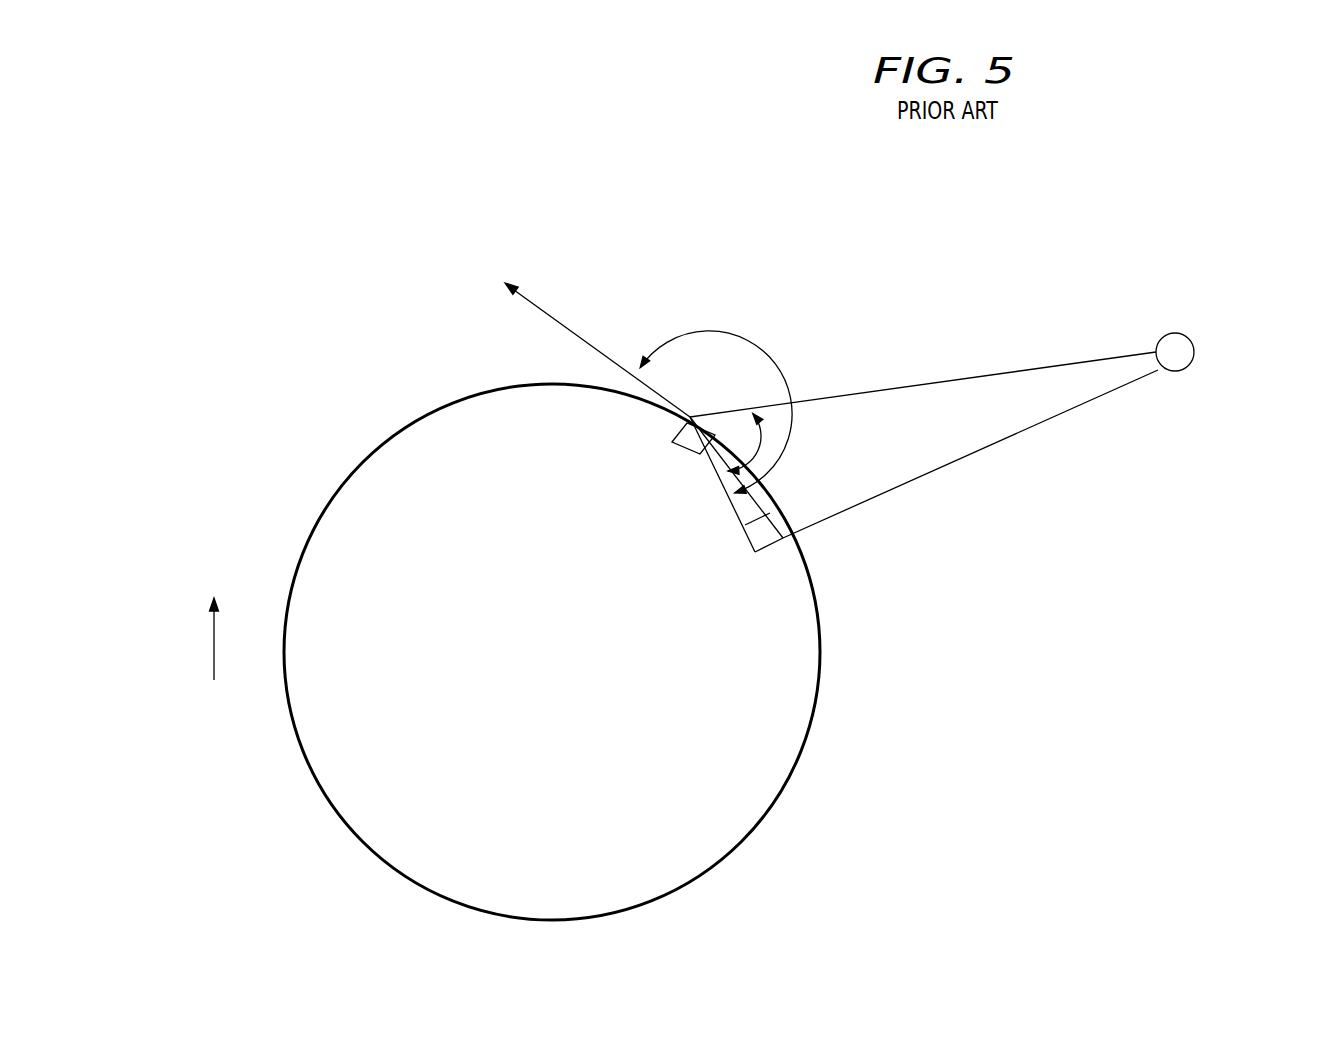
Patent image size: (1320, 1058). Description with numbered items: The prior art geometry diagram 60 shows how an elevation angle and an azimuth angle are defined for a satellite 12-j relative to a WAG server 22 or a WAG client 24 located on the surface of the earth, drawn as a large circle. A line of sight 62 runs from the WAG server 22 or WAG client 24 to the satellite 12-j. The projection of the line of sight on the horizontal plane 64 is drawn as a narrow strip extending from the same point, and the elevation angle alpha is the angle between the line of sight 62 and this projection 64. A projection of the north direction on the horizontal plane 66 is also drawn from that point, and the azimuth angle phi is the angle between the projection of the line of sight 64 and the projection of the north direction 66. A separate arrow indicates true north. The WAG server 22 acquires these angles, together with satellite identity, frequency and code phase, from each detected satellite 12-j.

The prior art geometry diagram 60 is at (962, 155).
The projection of the north direction on the horizontal plane 66 is at (537, 310).
The line of sight 62 is at (913, 385).
The projection of the line of sight on the horizontal plane 64 is at (732, 508).
The WAG server 22 is at (624, 458).
The WAG client 24 is at (673, 447).
The satellite 12-j is at (1187, 333).